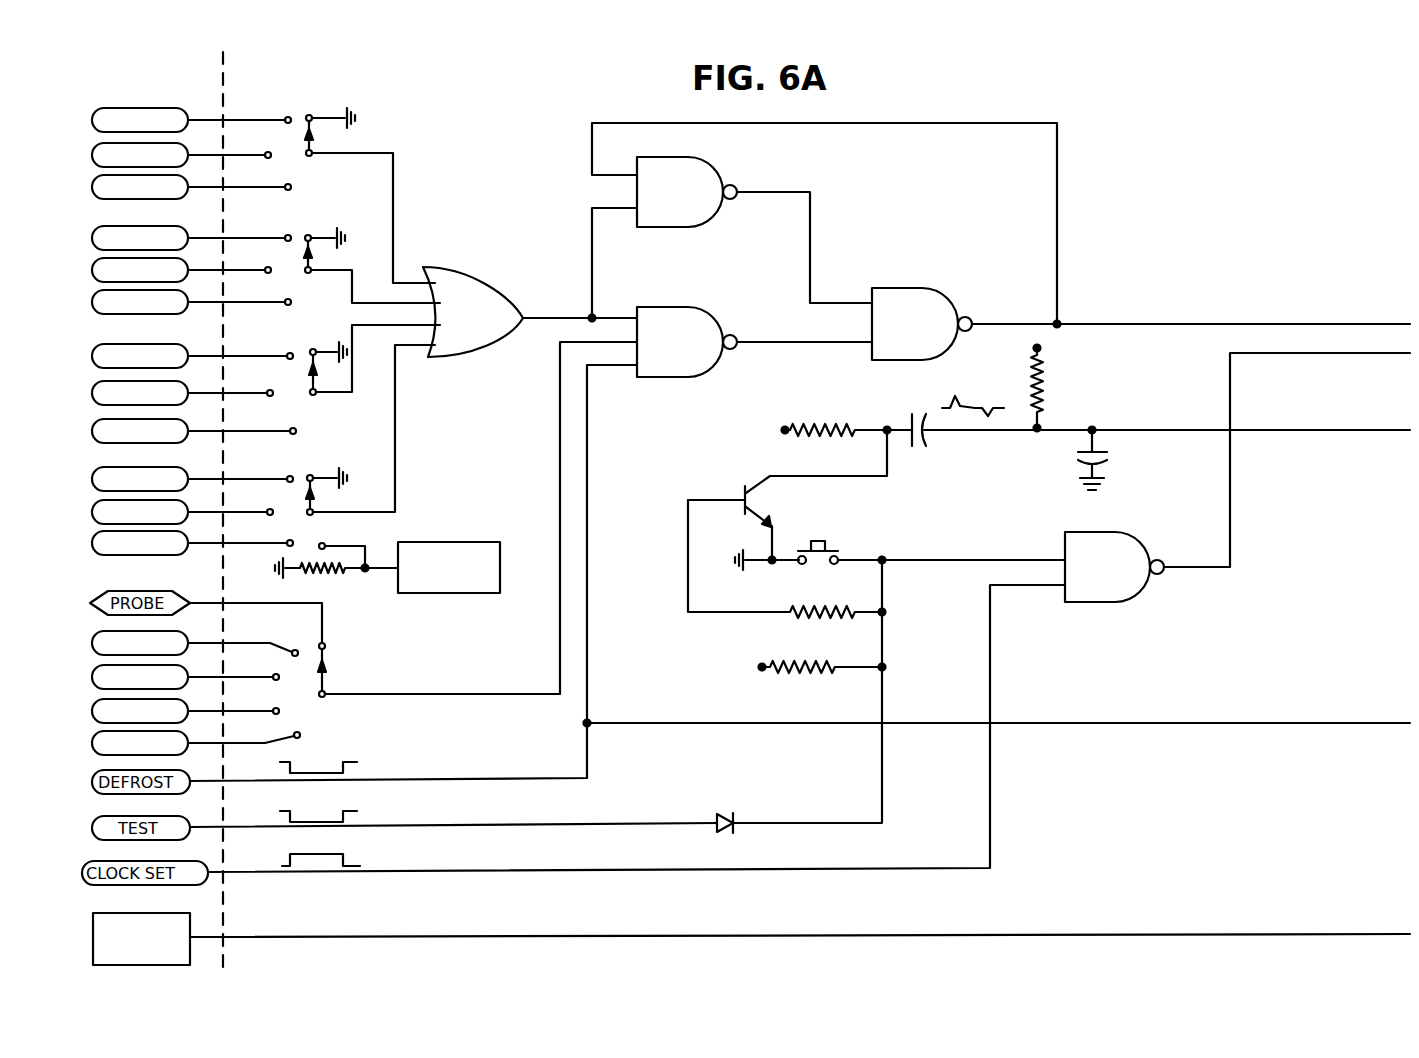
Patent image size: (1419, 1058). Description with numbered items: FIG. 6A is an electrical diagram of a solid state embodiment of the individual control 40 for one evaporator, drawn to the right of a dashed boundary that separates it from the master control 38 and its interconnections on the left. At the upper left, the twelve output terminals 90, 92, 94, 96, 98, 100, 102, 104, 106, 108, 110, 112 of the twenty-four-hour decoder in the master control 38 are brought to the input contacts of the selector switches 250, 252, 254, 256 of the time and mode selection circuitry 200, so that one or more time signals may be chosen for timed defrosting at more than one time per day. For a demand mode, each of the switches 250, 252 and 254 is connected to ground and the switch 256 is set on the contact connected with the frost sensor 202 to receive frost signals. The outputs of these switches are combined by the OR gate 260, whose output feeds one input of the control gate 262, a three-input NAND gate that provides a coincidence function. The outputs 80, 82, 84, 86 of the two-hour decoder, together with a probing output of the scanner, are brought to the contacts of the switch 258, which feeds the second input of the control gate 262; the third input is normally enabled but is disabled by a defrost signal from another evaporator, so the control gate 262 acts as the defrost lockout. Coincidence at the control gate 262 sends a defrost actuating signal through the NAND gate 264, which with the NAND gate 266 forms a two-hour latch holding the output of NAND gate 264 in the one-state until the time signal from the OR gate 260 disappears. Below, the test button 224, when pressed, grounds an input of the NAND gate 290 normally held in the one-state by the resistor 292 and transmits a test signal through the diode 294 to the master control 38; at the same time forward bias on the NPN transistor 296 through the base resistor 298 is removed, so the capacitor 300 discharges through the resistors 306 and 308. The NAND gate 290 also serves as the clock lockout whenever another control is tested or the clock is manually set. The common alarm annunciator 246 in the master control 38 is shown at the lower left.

The master control 38 is at (125, 69).
The individual control 40 is at (312, 69).
The output terminal of the 24-hour decoder 112 is at (98, 110).
The output terminal of the 24-hour decoder 90 is at (98, 146).
The output terminal of the 24-hour decoder 92 is at (98, 178).
The output terminal of the 24-hour decoder 94 is at (98, 229).
The output terminal of the 24-hour decoder 96 is at (98, 261).
The output terminal of the 24-hour decoder 98 is at (98, 293).
The output terminal of the 24-hour decoder 100 is at (99, 347).
The output terminal of the 24-hour decoder 102 is at (99, 384).
The output terminal of the 24-hour decoder 104 is at (99, 422).
The output terminal of the 24-hour decoder 106 is at (99, 470).
The output terminal of the 24-hour decoder 108 is at (99, 503).
The output terminal of the 24-hour decoder 110 is at (99, 534).
The output of the two-hour decoder 80 is at (97, 634).
The output of the two-hour decoder 82 is at (97, 668).
The output of the two-hour decoder 84 is at (97, 702).
The output of the two-hour decoder 86 is at (97, 734).
The common alarm annunciator 246 is at (100, 912).
The time and mode selection circuitry 200 is at (440, 160).
The frost sensor 202 is at (453, 541).
The selector switch 250 is at (309, 157).
The selector switch 252 is at (308, 274).
The selector switch 254 is at (313, 396).
The selector switch 256 is at (310, 516).
The selector switch 258 is at (322, 698).
The OR gate 260 is at (480, 268).
The control gate 262 is at (676, 307).
The NAND gate 264 is at (1141, 308).
The NAND gate 266 is at (705, 165).
The NAND gate 290 is at (1118, 603).
The resistor 292 is at (798, 676).
The diode 294 is at (720, 816).
The NPN transistor 296 is at (743, 488).
The base resistor 298 is at (796, 618).
The capacitor 300 is at (912, 420).
The resistor 306 is at (830, 418).
The resistor 308 is at (1043, 402).
The test button 224 is at (822, 540).